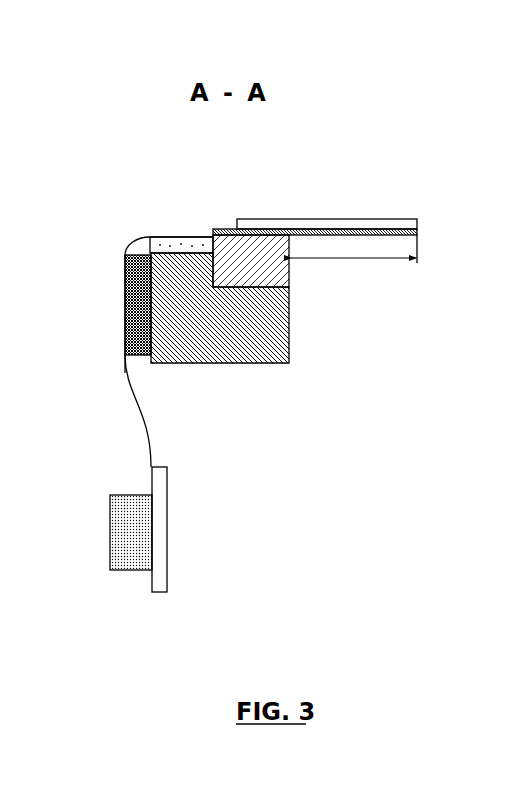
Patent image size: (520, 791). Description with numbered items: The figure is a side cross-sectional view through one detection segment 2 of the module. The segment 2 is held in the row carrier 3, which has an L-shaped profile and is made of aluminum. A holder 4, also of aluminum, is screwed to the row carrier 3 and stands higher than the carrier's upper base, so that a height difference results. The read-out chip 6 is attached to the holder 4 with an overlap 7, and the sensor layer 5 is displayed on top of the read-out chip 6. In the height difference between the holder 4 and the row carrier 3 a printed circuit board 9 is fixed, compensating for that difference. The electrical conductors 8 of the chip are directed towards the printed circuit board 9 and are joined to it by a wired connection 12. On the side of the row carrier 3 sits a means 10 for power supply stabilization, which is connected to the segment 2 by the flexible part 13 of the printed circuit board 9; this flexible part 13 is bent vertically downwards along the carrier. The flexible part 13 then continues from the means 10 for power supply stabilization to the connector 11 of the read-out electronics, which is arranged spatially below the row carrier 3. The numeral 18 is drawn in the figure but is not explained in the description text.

The segment 2 is at (123, 132).
The row carrier 3 is at (290, 338).
The holder 4 is at (290, 275).
The sensor layer 5 is at (400, 220).
The read-out chip 6 is at (398, 235).
The overlap 7 is at (354, 249).
The electrical conductors 8 is at (229, 226).
The printed circuit board 9 is at (166, 237).
The means for power supply stabilization 10 is at (122, 305).
The connector of the read-out electronics 11 is at (112, 542).
The wired connection 12 is at (208, 230).
The flexible part of the printed circuit board 13 is at (128, 243).
The bonding layer 18 is at (162, 238).